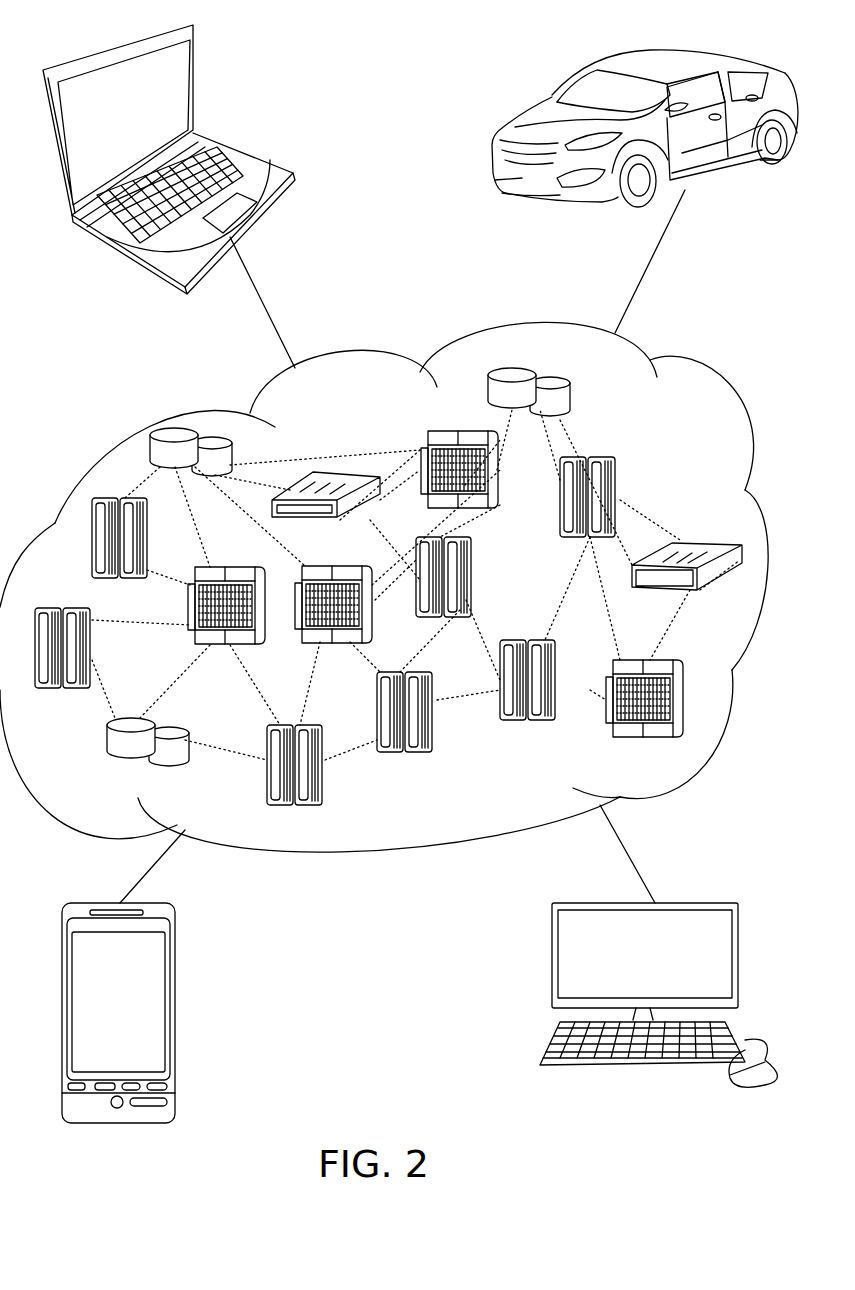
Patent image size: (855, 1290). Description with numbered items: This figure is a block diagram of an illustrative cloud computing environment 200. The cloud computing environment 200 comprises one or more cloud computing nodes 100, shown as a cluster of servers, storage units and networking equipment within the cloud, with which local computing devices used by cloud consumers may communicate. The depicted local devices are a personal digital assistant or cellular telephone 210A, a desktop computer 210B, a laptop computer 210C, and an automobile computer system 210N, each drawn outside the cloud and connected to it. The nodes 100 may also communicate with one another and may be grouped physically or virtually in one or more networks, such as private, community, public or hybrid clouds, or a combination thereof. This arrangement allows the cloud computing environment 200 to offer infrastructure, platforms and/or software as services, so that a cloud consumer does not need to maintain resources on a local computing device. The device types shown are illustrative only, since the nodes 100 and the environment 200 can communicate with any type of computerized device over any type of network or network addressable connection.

The cloud computing node 100 is at (713, 518).
The cloud computing environment 200 is at (715, 387).
The personal digital assistant (PDA) or cellular telephone 210A is at (172, 930).
The desktop computer 210B is at (737, 920).
The laptop computer 210C is at (297, 128).
The automobile computer system 210N is at (750, 68).